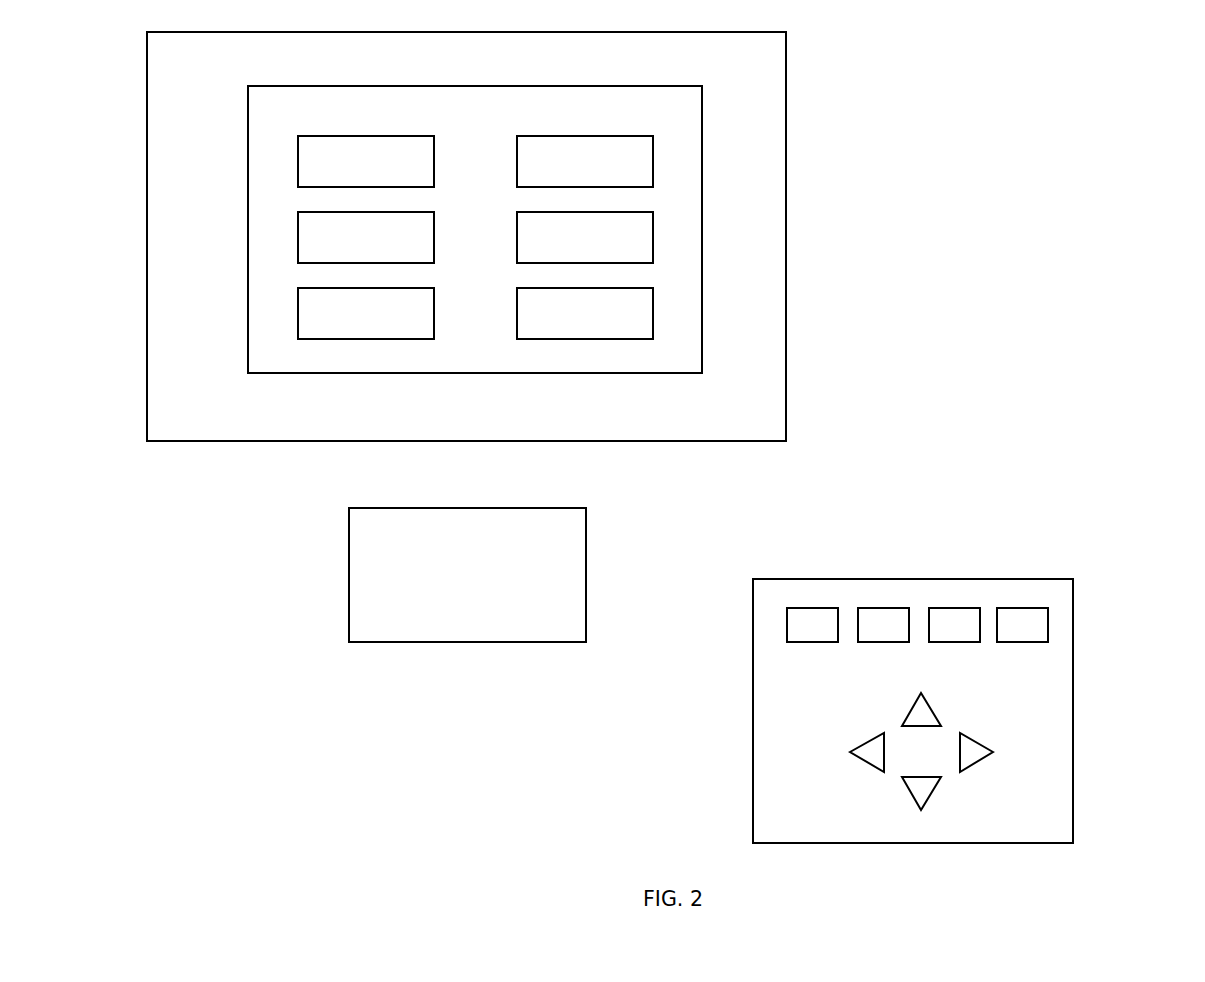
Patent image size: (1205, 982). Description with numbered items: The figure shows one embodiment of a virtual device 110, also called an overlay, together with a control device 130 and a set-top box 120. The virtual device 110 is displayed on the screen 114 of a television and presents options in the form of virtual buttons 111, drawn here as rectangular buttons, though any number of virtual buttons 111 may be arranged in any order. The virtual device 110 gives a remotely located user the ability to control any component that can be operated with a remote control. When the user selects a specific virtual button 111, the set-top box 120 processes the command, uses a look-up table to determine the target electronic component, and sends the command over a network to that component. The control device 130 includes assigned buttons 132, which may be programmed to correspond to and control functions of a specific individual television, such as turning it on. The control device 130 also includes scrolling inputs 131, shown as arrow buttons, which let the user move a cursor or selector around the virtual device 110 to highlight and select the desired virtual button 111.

The screen 114 is at (466, 236).
The virtual device 110 is at (475, 229).
The virtual buttons 111 is at (635, 313).
The set-top box 120 is at (467, 575).
The control device 130 is at (913, 711).
The assigned buttons 132 is at (805, 608).
The scrolling inputs 131 is at (921, 788).